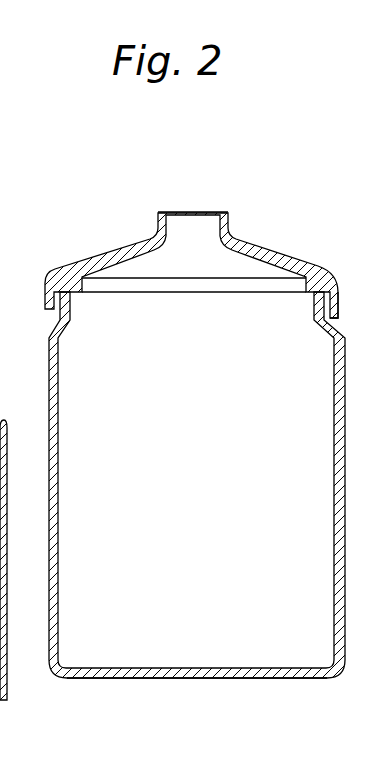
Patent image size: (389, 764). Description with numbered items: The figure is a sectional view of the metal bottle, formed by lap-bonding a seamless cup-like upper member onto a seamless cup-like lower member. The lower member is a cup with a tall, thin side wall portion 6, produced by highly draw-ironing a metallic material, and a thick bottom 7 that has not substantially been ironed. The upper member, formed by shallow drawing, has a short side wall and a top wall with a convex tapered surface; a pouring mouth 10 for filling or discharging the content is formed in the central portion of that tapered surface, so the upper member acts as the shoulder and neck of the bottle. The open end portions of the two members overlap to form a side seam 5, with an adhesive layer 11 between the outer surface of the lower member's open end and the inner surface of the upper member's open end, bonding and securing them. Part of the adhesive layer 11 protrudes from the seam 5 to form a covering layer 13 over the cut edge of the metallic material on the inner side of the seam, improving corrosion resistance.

The side seam 5 is at (43, 282).
The pouring mouth 10 is at (190, 212).
The covering layer 13 is at (317, 268).
The adhesive layer 11 is at (335, 289).
The thin side wall portion 6 is at (49, 610).
The bottom 7 is at (215, 679).